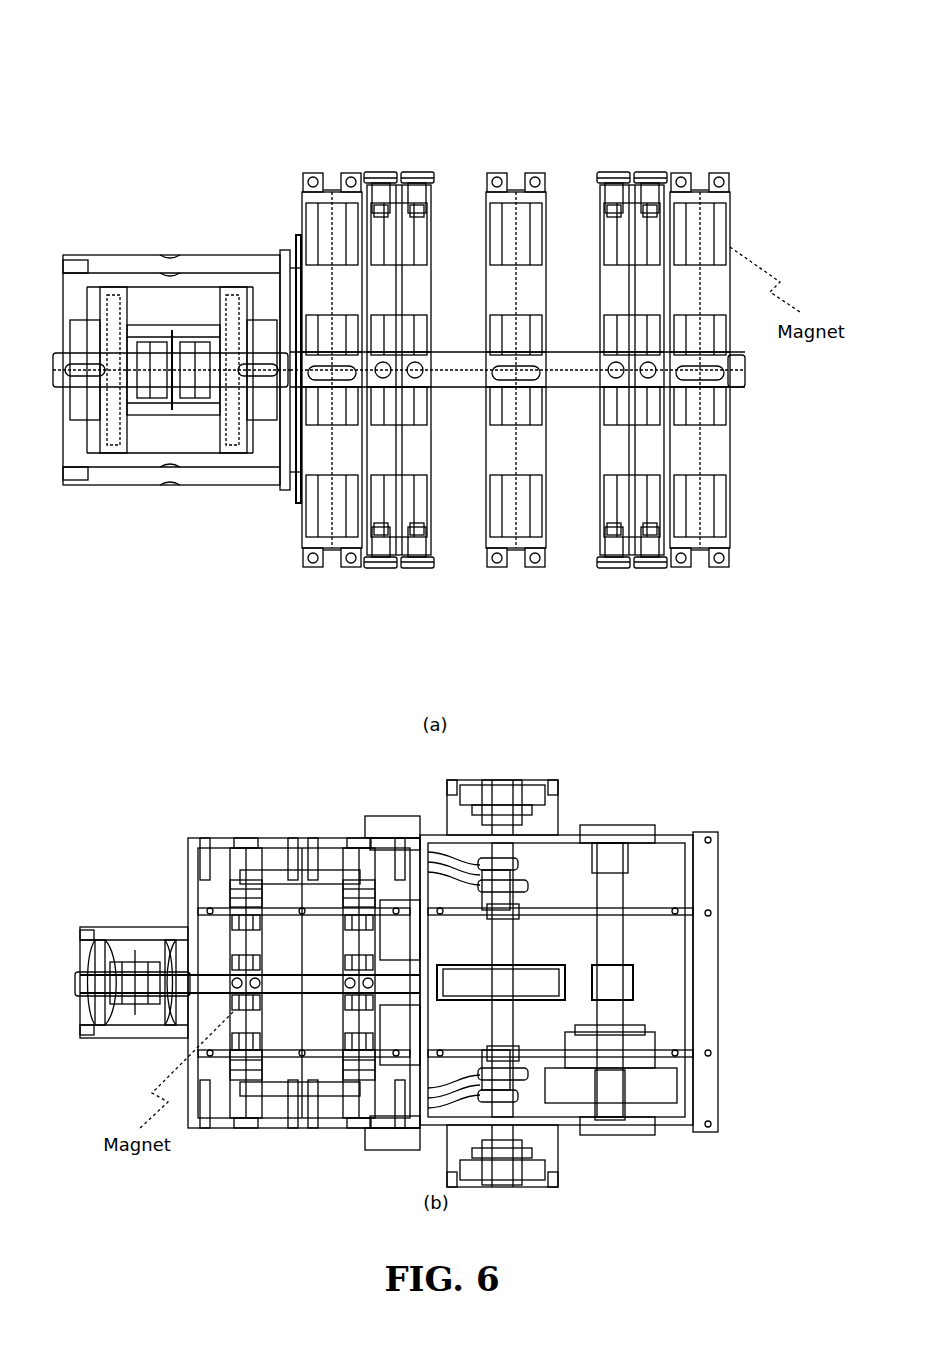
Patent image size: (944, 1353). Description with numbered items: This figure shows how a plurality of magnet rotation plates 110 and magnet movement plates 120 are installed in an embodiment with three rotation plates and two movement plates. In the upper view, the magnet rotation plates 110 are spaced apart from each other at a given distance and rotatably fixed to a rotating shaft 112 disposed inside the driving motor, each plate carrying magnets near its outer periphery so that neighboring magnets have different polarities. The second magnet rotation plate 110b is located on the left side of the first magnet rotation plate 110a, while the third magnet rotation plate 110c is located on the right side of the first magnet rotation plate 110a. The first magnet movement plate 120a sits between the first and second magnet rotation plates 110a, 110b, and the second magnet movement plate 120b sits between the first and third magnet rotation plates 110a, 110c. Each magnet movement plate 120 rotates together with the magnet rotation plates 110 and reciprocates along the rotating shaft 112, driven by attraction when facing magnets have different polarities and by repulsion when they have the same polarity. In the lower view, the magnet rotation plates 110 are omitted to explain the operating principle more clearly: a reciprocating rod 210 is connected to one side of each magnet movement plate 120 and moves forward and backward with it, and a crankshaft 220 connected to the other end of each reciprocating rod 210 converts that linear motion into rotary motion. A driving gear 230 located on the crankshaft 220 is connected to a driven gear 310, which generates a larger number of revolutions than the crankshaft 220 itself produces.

The magnet rotation plate 110 is at (530, 290).
The first magnet rotation plate 110a is at (508, 165).
The second magnet rotation plate 110b is at (326, 172).
The third magnet rotation plate 110c is at (712, 326).
The rotating shaft 112 is at (750, 372).
The magnet movement plate 120 is at (448, 650).
The first magnet movement plate 120a is at (403, 570).
The second magnet movement plate 120b is at (453, 680).
The reciprocating rod 210 is at (445, 1115).
The crankshaft 220 is at (560, 808).
The driving gear 230 is at (542, 957).
The driven gear 310 is at (633, 970).